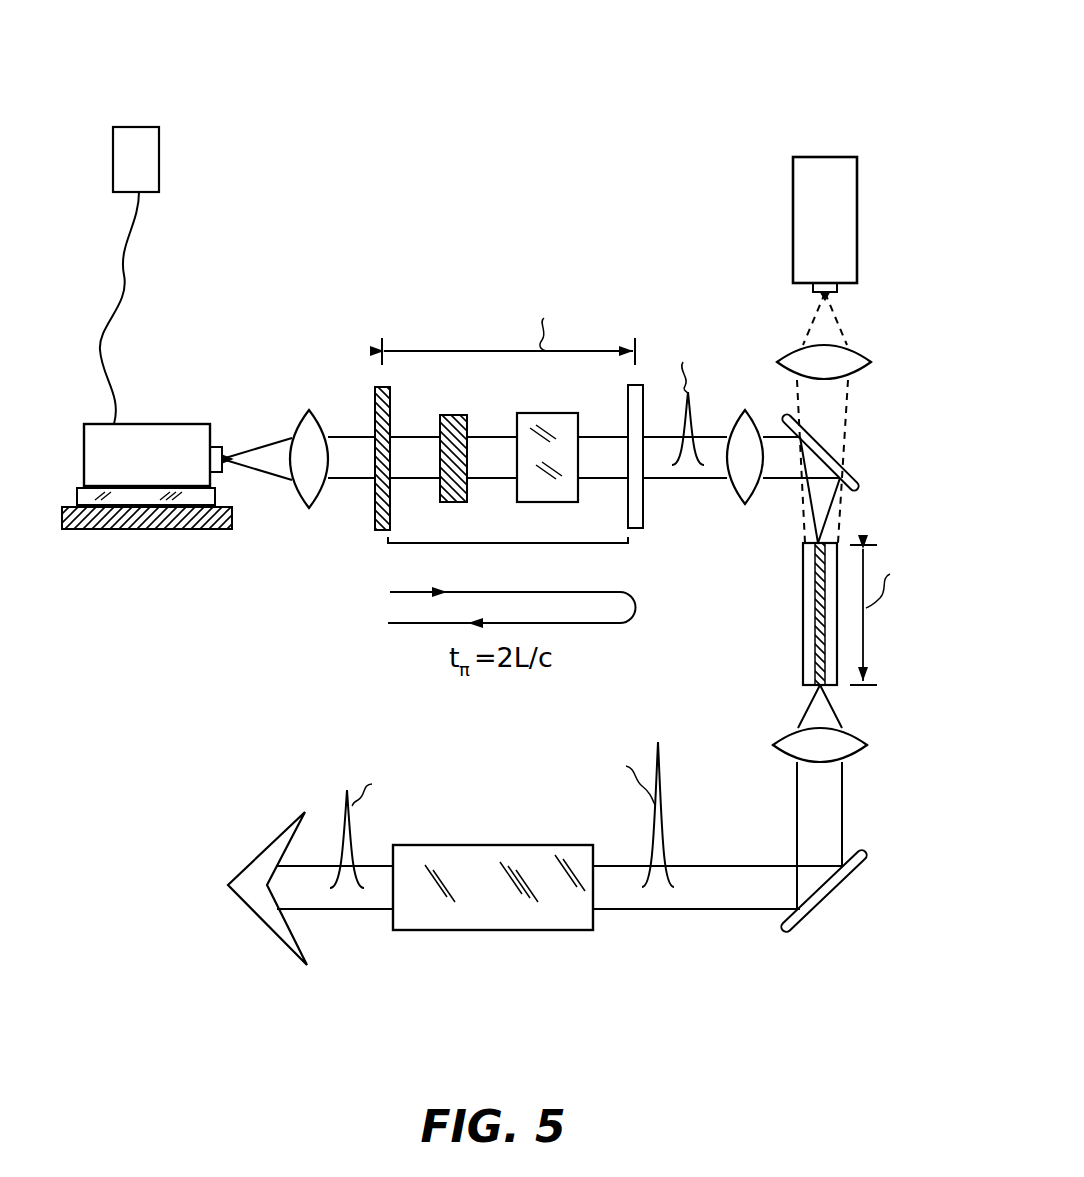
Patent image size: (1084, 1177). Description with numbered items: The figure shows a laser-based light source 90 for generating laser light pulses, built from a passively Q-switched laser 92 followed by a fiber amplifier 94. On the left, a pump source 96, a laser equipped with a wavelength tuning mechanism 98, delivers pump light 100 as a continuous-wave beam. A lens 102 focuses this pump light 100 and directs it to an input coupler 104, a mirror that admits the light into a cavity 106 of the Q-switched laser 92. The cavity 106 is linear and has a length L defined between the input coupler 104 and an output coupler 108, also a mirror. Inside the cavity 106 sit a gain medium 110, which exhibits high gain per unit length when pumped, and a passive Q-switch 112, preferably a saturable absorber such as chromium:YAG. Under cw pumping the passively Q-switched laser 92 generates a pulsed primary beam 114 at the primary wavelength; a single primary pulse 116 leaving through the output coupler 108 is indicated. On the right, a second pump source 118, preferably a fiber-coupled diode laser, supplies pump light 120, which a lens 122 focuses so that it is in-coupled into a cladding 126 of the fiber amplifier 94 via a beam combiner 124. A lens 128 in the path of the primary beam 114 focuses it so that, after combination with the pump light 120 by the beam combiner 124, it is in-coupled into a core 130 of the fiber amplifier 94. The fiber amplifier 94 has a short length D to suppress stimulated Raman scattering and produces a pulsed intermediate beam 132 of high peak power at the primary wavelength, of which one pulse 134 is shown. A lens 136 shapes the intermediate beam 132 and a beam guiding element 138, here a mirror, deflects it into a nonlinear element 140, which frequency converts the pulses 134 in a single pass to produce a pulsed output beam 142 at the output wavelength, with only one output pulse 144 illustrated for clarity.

The light source 90 is at (584, 74).
The passively Q-switched laser 92 is at (438, 304).
The fiber amplifier 94 is at (734, 646).
The pump source 96 is at (149, 424).
The wavelength tuning mechanism 98 is at (159, 166).
The pump light 100 is at (260, 445).
The lens 102 is at (312, 508).
The input coupler 104 is at (377, 398).
The cavity 106 is at (518, 543).
The output coupler 108 is at (643, 530).
The gain medium 110 is at (545, 413).
The passive Q-switch 112 is at (448, 415).
The primary beam 114 is at (672, 480).
The primary pulse 116 is at (698, 410).
The pump source 118 is at (793, 210).
The pump light 120 is at (811, 326).
The lens 122 is at (872, 362).
The beam combiner 124 is at (860, 492).
The cladding 126 is at (803, 650).
The lens 128 is at (752, 503).
The core 130 is at (803, 594).
The pulsed intermediate beam 132 is at (797, 815).
The pulse 134 is at (670, 842).
The lens 136 is at (795, 730).
The beam guiding element 138 is at (822, 897).
The nonlinear element 140 is at (487, 845).
The pulsed output beam 142 is at (352, 909).
The pulse 144 is at (336, 822).